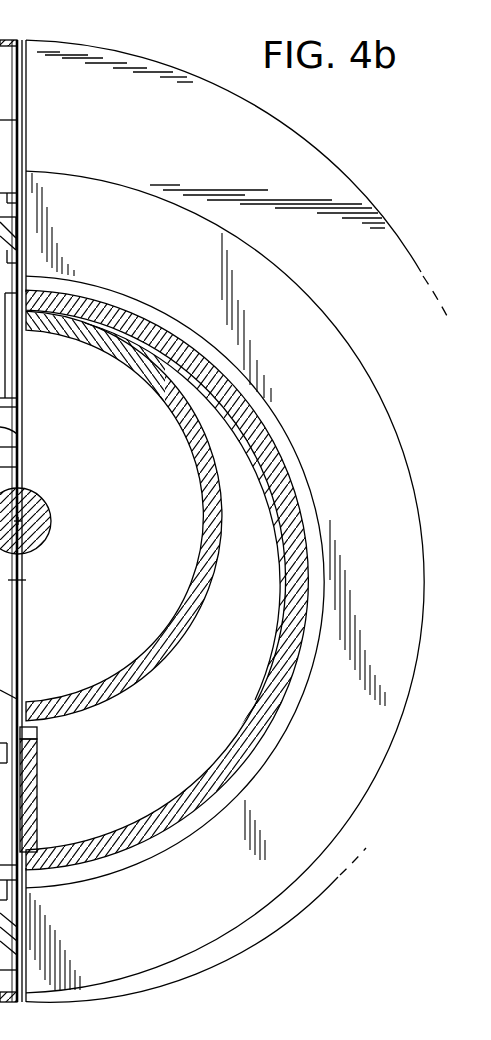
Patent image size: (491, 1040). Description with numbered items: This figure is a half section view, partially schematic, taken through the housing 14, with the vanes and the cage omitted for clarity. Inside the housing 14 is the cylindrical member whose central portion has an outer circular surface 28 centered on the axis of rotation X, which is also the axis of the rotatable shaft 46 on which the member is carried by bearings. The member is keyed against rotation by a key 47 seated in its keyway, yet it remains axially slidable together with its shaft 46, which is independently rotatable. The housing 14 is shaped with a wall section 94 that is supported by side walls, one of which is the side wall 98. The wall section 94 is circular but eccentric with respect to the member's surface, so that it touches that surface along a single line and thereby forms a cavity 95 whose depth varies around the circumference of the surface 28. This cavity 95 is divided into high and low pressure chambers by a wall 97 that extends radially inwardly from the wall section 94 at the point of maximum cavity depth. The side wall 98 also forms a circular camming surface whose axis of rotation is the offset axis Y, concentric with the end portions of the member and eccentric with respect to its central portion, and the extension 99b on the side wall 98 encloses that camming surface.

The housing 14 is at (316, 150).
The side wall 98 is at (153, 129).
The extension on side wall 98 99b is at (311, 296).
The wall section 94 is at (280, 458).
The surface 28 is at (163, 662).
The rotatable shaft 46 is at (40, 502).
The cavity 95 is at (163, 745).
The key 47 is at (40, 737).
The wall 97 is at (37, 808).
The axis of rotation X is at (22, 523).
The axis of rotation Y is at (22, 584).